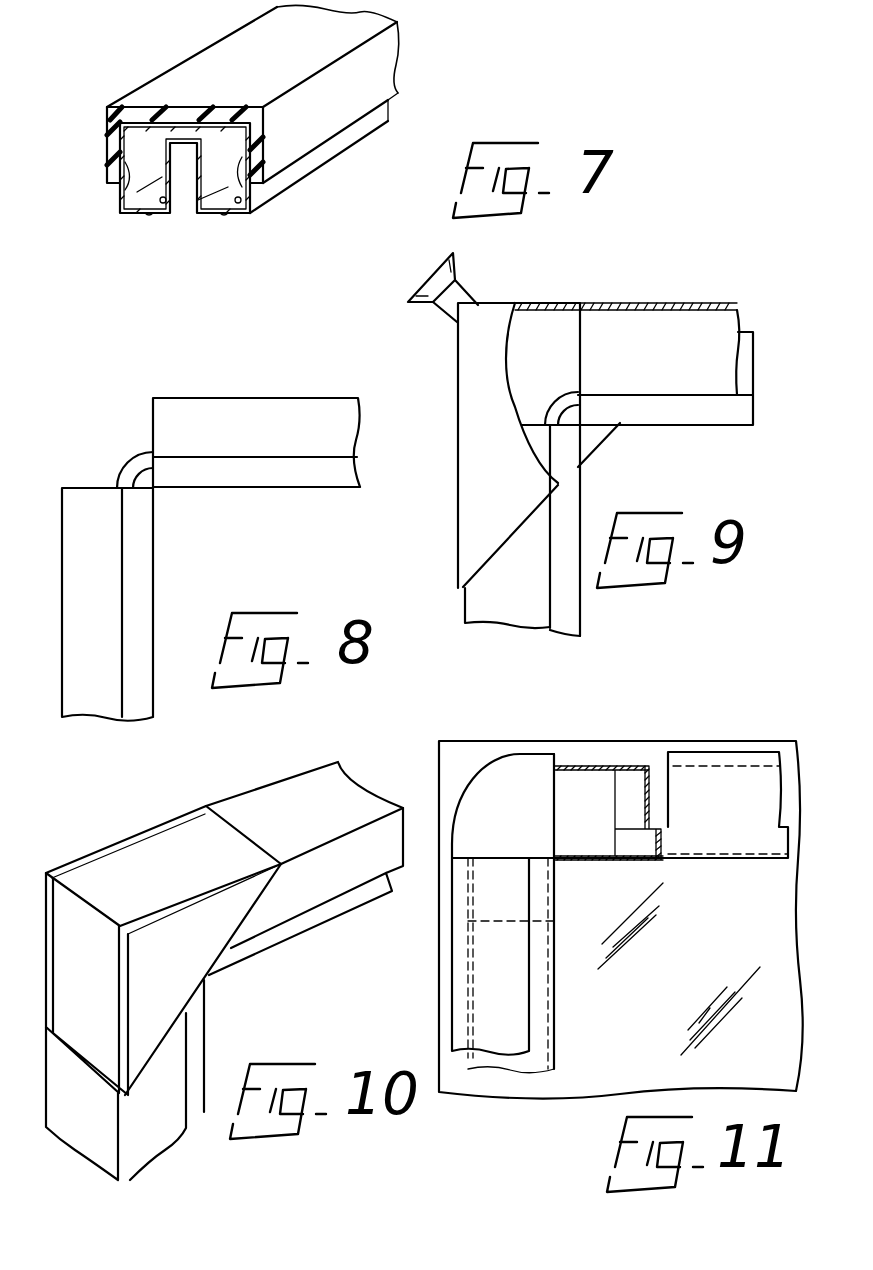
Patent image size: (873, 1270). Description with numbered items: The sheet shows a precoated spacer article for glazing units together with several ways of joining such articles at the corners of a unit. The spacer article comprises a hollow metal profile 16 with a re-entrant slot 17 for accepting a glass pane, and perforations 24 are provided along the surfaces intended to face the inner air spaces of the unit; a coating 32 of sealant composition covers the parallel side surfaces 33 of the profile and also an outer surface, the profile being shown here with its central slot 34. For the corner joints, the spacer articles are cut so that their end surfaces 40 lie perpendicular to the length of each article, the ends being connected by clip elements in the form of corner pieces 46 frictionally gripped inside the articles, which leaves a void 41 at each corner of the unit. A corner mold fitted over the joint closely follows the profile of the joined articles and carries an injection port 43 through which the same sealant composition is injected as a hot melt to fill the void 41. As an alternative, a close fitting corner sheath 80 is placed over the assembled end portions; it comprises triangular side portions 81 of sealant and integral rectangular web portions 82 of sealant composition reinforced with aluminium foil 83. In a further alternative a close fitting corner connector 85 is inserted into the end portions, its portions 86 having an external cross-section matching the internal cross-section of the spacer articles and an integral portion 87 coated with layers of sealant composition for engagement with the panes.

In FIG. 7, the hollow metal profile 16 is at (315, 160).
In FIG. 7, the re-entrant slot 17 is at (182, 230).
In FIG. 7, the perforations 24 is at (222, 214).
In FIG. 7, the coating 32 is at (383, 78).
In FIG. 7, the parallel side surfaces 33 is at (247, 187).
In FIG. 7, the slot 34 is at (183, 147).
In FIG. 8, the end surfaces 40 is at (87, 487).
In FIG. 9, the end surfaces 40 is at (513, 407).
In FIG. 8, the void 41 is at (100, 414).
In FIG. 9, the injection port 43 is at (442, 302).
In FIG. 8, the corner pieces 46 is at (128, 490).
In FIG. 9, the corner pieces 46 is at (555, 420).
In FIG. 10, the corner sheath 80 is at (250, 978).
In FIG. 10, the triangular side portions 81 is at (167, 1013).
In FIG. 10, the rectangular web portions 82 is at (53, 930).
In FIG. 10, the aluminium foil 83 is at (120, 873).
In FIG. 11, the corner connector 85 is at (581, 722).
In FIG. 11, the portions 86 is at (595, 788).
In FIG. 11, the integral portion 87 is at (491, 790).